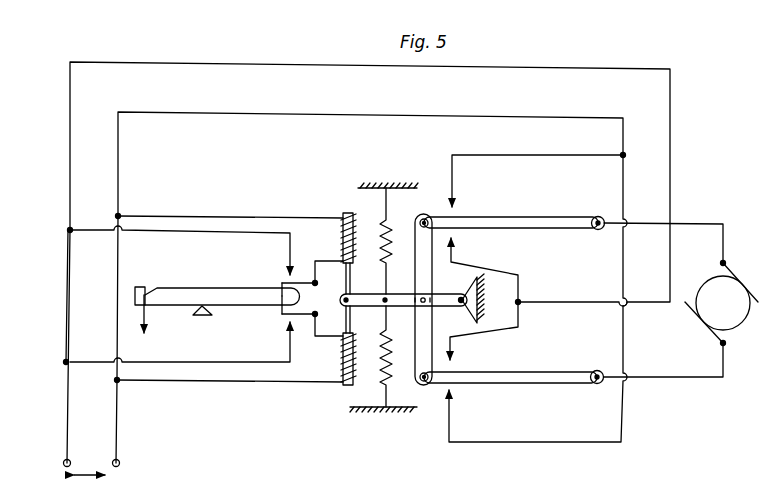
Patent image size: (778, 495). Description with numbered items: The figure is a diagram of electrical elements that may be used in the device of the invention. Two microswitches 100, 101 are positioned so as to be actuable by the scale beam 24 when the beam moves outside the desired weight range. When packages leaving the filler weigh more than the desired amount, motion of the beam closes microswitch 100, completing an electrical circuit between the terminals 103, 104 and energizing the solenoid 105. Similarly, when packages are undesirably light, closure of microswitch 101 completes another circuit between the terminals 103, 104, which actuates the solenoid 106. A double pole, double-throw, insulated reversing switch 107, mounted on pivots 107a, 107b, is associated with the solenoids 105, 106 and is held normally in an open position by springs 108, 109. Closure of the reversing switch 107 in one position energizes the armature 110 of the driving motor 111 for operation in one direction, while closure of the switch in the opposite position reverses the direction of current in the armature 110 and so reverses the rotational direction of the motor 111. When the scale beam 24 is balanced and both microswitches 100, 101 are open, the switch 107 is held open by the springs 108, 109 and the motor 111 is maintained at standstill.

The scale beam 24 is at (223, 290).
The microswitch 100 is at (290, 272).
The microswitch 101 is at (286, 322).
The terminal 103 is at (70, 230).
The terminal 104 is at (118, 216).
The solenoid 105 is at (343, 237).
The solenoid 106 is at (343, 358).
The reversing switch 107 is at (420, 256).
The pivot 107a is at (594, 217).
The pivot 107b is at (594, 384).
The spring 108 is at (387, 213).
The spring 109 is at (389, 387).
The armature 110 is at (742, 264).
The driving motor 111 is at (706, 334).